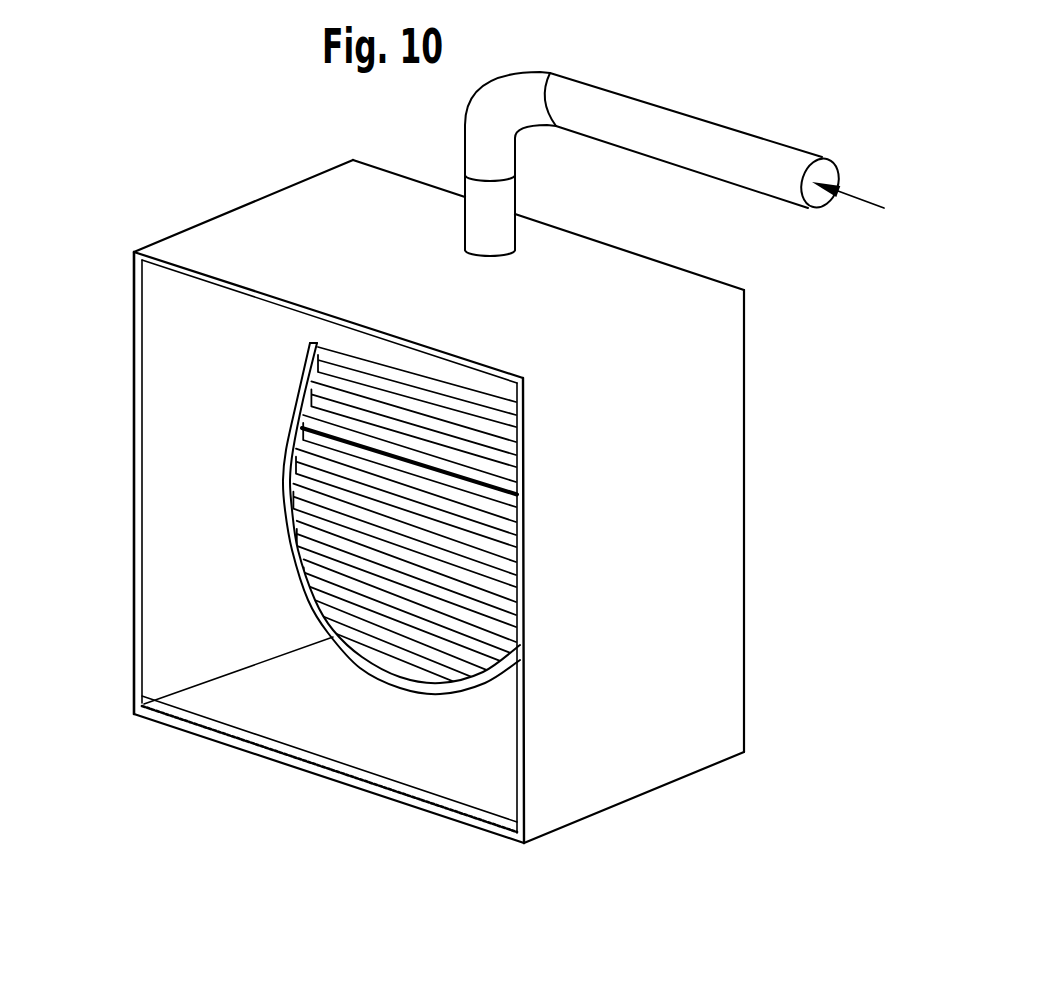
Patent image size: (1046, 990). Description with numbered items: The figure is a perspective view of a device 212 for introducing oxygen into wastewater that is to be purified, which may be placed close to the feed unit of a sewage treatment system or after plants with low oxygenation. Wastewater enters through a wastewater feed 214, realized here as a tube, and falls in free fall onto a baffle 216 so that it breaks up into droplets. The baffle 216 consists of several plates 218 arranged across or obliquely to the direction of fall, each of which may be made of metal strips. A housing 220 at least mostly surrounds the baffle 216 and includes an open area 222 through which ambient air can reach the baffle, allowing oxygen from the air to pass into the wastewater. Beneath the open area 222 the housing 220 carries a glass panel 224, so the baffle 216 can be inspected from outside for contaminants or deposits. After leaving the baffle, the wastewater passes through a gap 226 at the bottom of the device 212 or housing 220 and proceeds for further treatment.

The device for introducing oxygen 212 is at (189, 171).
The wastewater feed 214 is at (690, 110).
The baffle 216 is at (290, 460).
The louvers / slats 218 is at (325, 352).
The housing 220 is at (745, 345).
The open area 222 is at (147, 297).
The glass panel 224 is at (168, 577).
The gap 226 is at (356, 793).